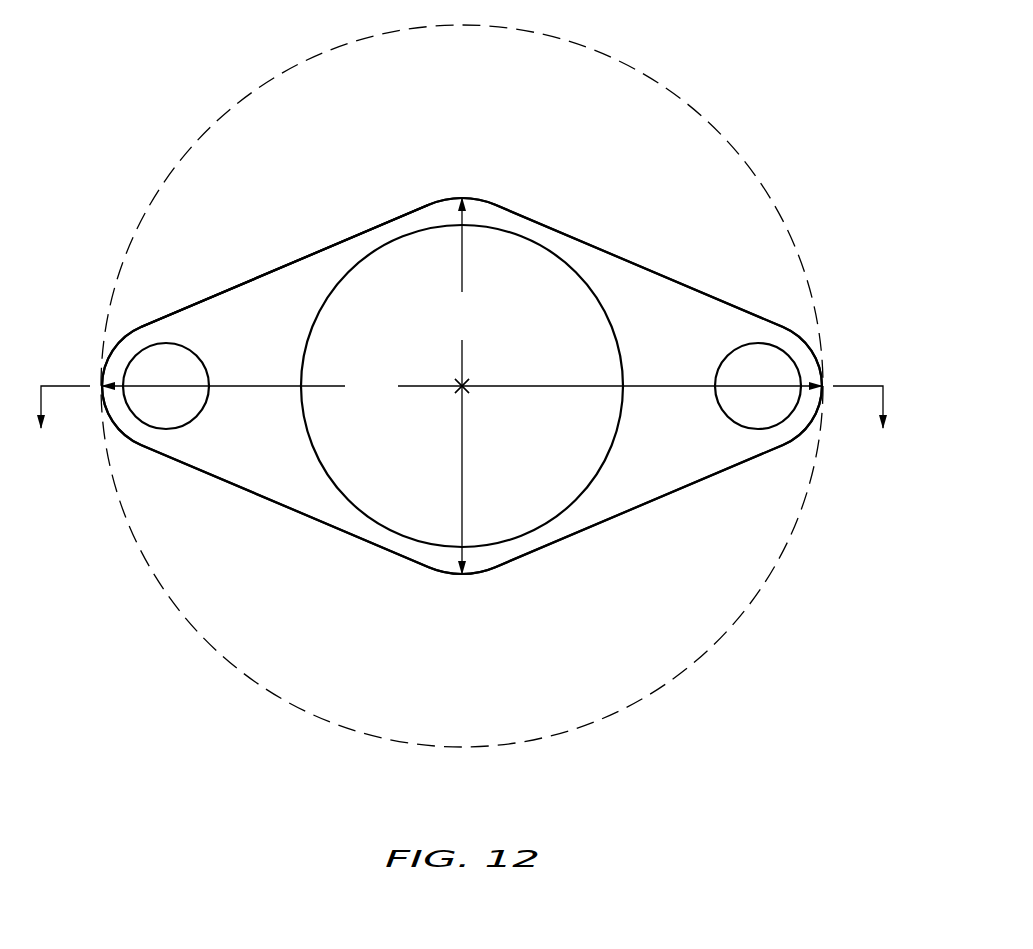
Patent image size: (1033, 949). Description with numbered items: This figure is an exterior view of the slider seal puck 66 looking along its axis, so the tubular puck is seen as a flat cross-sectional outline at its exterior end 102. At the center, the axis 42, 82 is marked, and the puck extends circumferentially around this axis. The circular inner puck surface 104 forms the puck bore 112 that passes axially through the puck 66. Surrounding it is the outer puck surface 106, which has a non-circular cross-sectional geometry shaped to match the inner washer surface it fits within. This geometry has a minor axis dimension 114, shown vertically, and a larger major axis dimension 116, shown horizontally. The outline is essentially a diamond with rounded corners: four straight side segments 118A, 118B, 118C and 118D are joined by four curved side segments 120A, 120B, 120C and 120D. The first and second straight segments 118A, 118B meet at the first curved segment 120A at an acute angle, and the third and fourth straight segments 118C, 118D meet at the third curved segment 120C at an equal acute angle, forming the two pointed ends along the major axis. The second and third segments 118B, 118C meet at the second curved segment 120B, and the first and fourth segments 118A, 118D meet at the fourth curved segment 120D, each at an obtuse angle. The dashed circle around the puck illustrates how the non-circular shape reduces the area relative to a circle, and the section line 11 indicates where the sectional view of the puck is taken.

The slider seal puck 66 is at (712, 90).
The exterior end 102 is at (693, 313).
The inner puck surface 104 is at (365, 257).
The outer puck surface 106 is at (353, 237).
The puck bore 112 is at (554, 350).
The minor axis dimension 114 is at (465, 386).
The major axis dimension 116 is at (462, 387).
The axis 42 is at (466, 391).
The center axis 82 is at (462, 386).
The first straight side segment 118A is at (282, 507).
The second straight side segment 118B is at (263, 274).
The third straight side segment 118C is at (610, 251).
The fourth straight side segment 118D is at (621, 521).
The first curved side segment 120A is at (112, 422).
The second curved side segment 120B is at (474, 198).
The third curved side segment 120C is at (812, 355).
The fourth curved side segment 120D is at (475, 574).
The section line 11- 11 is at (462, 425).